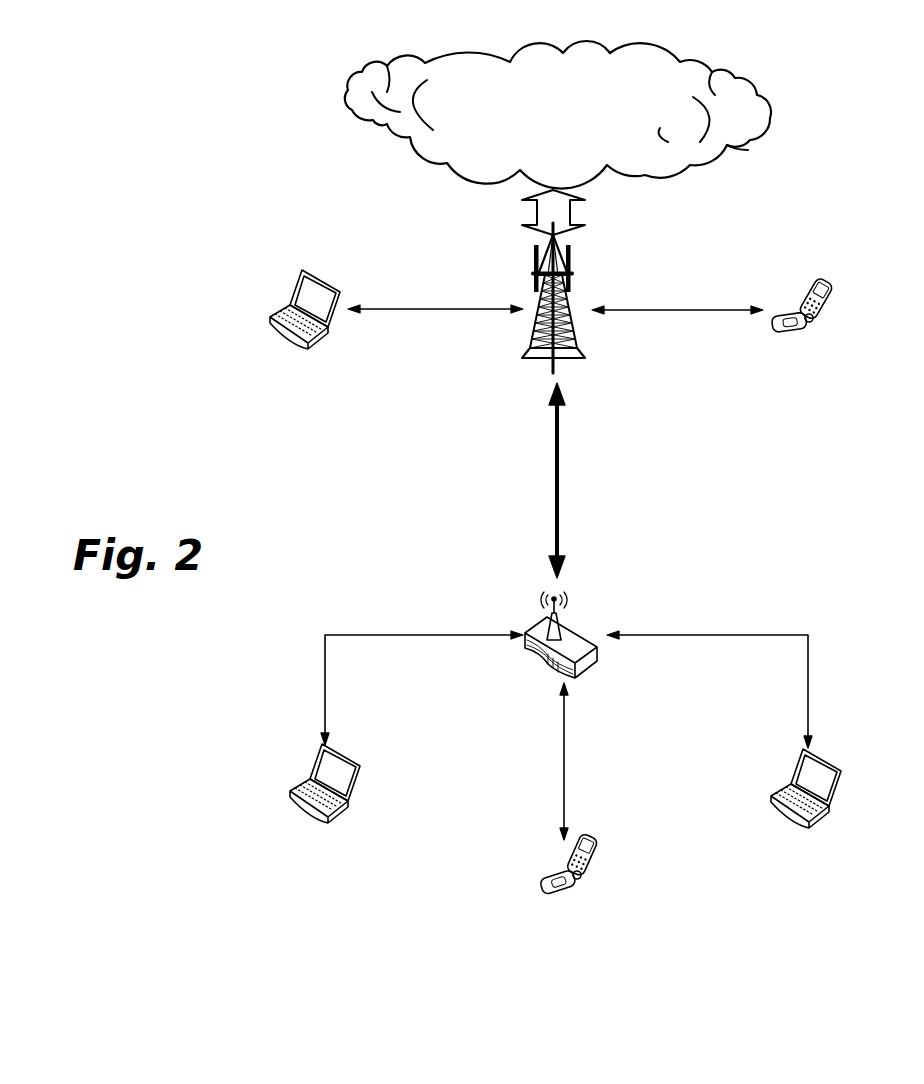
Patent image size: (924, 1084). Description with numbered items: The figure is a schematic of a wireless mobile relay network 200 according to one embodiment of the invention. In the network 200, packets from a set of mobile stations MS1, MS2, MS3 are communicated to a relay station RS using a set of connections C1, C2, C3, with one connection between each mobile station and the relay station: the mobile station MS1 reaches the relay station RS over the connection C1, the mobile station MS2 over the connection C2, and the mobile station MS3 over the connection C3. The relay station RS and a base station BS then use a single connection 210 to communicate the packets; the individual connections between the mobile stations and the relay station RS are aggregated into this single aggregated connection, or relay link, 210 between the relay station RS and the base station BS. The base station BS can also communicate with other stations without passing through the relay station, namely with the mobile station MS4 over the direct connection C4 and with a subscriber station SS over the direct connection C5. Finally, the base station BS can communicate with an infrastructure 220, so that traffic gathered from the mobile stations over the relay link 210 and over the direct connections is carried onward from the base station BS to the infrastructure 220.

The network 200 is at (178, 514).
The single connection 210 is at (560, 458).
The infrastructure 220 is at (705, 146).
The base station BS is at (522, 326).
The relay station RS is at (540, 660).
The subscriber station SS is at (825, 300).
The mobile station MS1 is at (312, 778).
The mobile station MS2 is at (592, 868).
The mobile station MS3 is at (818, 815).
The mobile station MS4 is at (317, 335).
The connection C1 is at (397, 633).
The connection C2 is at (563, 730).
The connection C3 is at (752, 634).
The direct connection C4 is at (375, 309).
The direct connection C5 is at (715, 310).